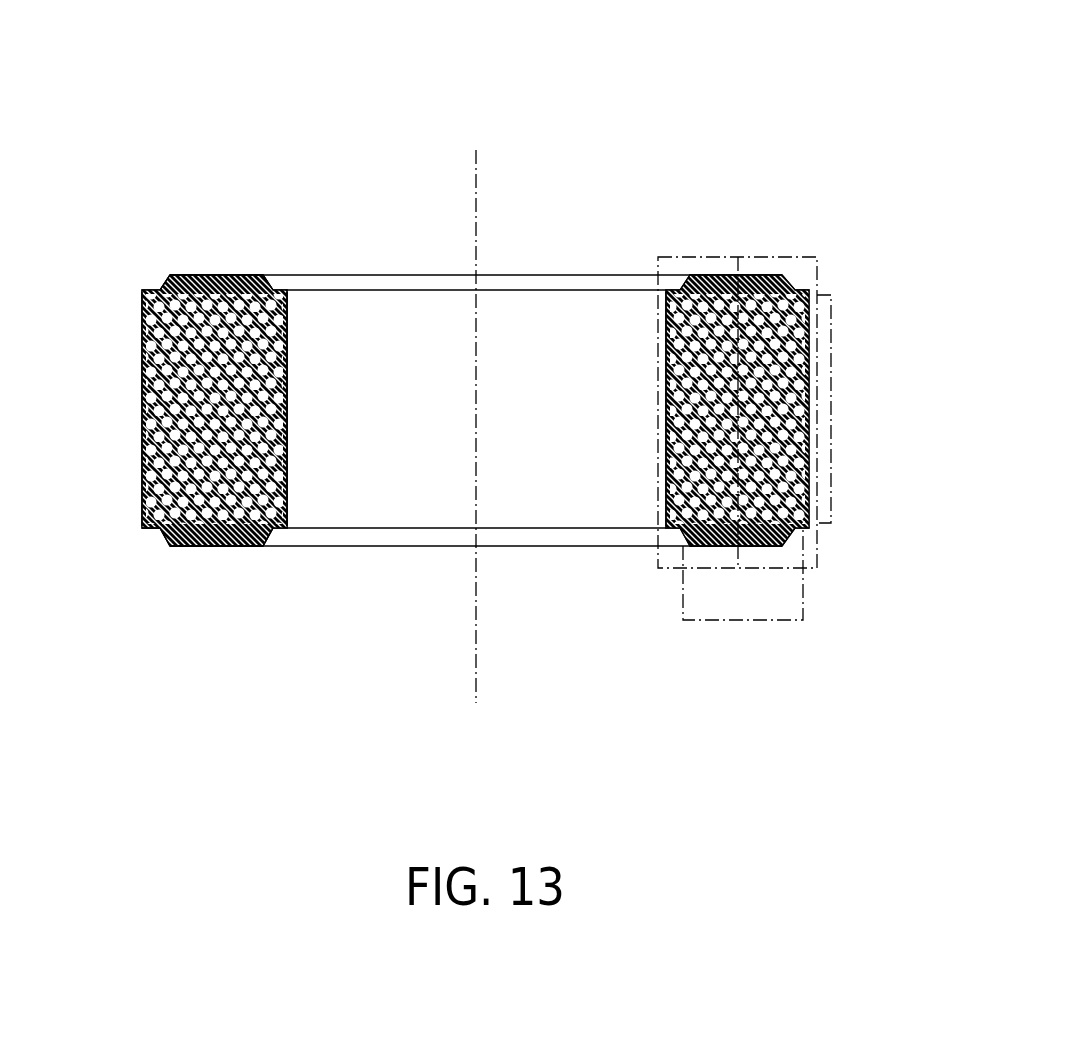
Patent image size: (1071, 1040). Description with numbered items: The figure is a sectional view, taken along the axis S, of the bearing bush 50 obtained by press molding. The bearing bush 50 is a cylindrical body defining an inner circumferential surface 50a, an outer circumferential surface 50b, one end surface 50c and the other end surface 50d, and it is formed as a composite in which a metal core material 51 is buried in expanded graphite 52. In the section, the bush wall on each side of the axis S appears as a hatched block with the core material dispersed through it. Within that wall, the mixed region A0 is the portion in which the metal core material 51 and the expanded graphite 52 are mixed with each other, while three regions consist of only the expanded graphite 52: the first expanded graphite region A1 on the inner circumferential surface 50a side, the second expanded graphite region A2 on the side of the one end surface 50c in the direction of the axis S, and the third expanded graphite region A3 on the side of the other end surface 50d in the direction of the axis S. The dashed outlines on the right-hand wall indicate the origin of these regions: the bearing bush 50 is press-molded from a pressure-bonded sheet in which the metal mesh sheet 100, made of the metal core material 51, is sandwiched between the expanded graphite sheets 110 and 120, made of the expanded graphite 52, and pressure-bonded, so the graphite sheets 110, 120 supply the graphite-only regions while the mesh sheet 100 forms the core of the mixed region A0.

The bearing bush 50 is at (620, 108).
The inner circumferential surface 50a is at (287, 437).
The outer circumferential surface 50b is at (142, 400).
The one end surface 50c is at (187, 275).
The other end surface 50d is at (192, 546).
The metal core material 51 is at (140, 528).
The expanded graphite 52 is at (248, 274).
The first expanded graphite region A1 is at (287, 360).
The second expanded graphite region A2 is at (220, 275).
The third expanded graphite region A3 is at (217, 546).
The mixed region A0 is at (831, 367).
The metal mesh sheet 100 is at (748, 622).
The expanded graphite sheet 110 is at (660, 470).
The expanded graphite sheet 120 is at (815, 460).
The axis S is at (477, 660).